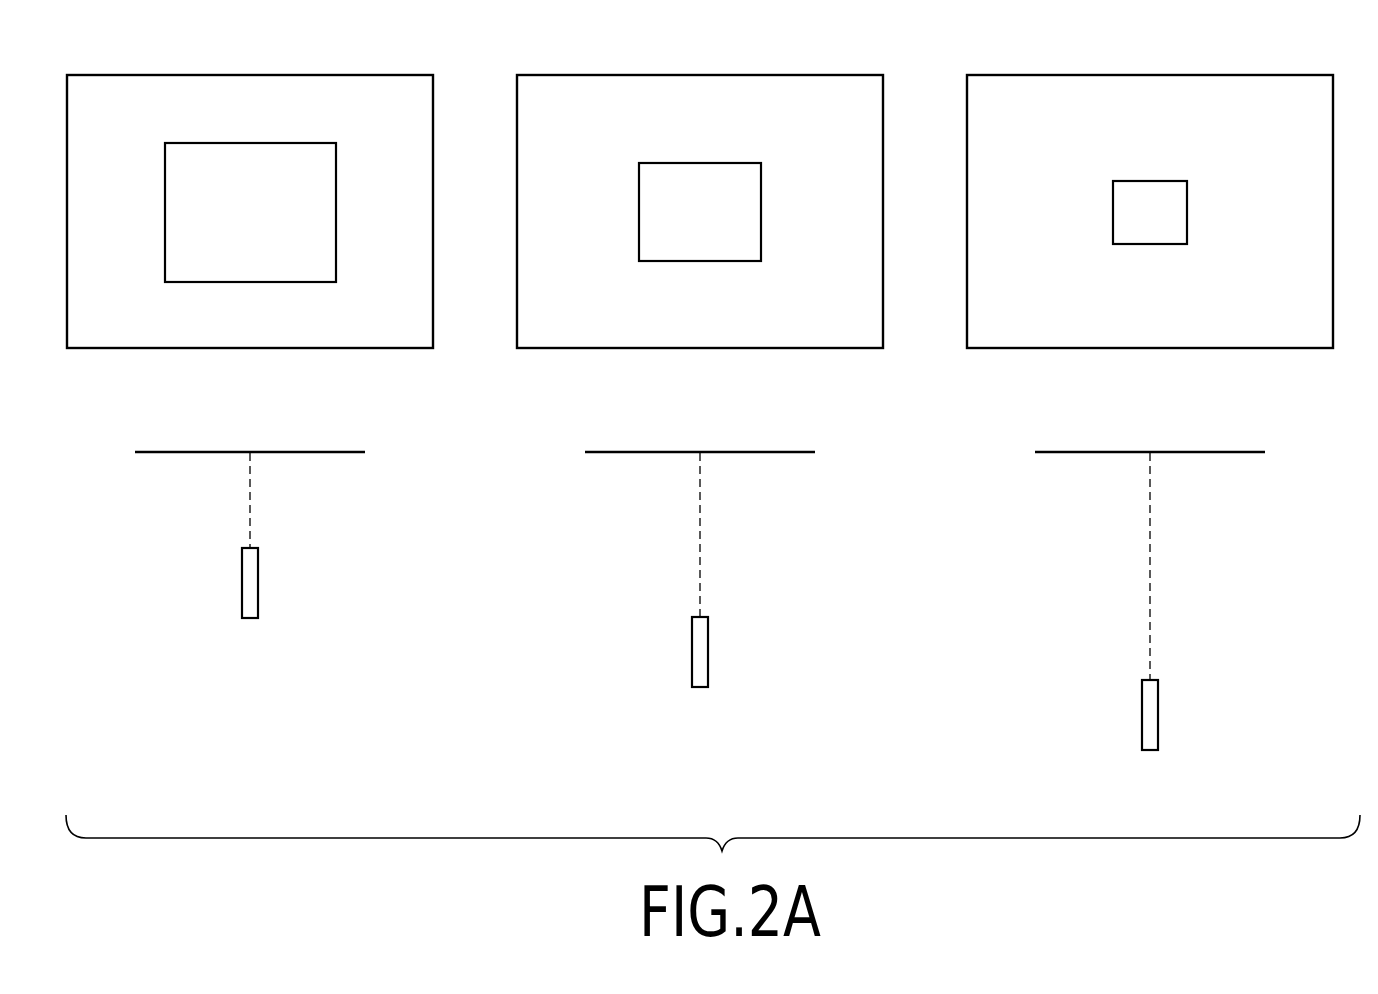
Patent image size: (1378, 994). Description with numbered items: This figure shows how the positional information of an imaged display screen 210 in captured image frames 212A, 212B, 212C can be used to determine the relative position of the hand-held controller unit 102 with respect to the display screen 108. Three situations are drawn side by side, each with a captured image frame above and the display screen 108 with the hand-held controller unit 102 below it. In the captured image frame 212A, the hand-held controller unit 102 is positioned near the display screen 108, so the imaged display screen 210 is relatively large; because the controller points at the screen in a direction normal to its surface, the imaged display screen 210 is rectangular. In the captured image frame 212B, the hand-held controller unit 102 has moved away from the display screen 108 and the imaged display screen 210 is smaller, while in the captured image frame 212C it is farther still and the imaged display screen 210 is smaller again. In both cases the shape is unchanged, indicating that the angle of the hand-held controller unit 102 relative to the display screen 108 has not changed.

The hand-held controller unit 102 is at (259, 584).
The display screen 108 is at (285, 453).
The imaged display screen 210 is at (303, 142).
The captured image frame 212A is at (352, 350).
The captured image frame 212B is at (802, 350).
The captured image frame 212C is at (1252, 350).